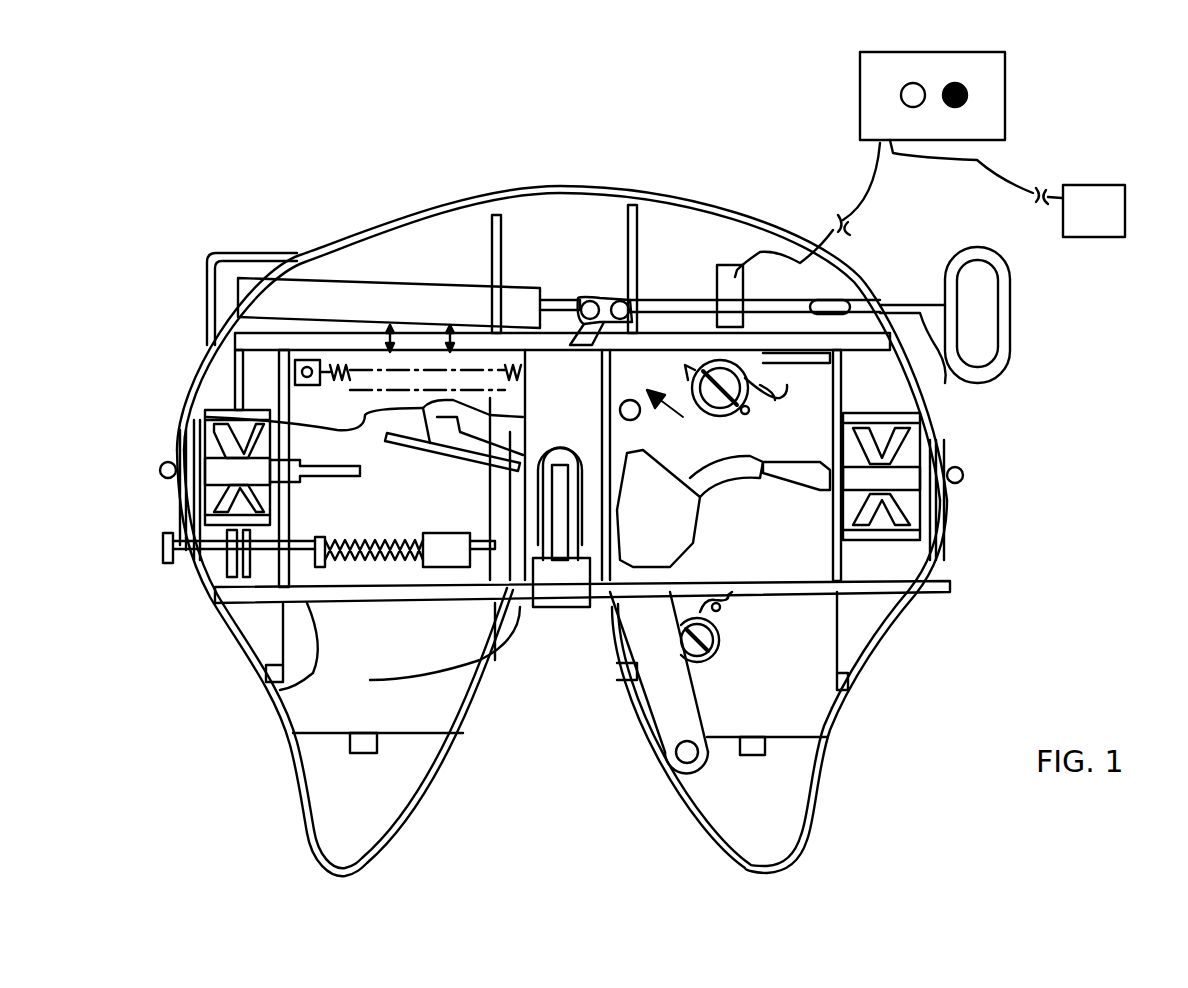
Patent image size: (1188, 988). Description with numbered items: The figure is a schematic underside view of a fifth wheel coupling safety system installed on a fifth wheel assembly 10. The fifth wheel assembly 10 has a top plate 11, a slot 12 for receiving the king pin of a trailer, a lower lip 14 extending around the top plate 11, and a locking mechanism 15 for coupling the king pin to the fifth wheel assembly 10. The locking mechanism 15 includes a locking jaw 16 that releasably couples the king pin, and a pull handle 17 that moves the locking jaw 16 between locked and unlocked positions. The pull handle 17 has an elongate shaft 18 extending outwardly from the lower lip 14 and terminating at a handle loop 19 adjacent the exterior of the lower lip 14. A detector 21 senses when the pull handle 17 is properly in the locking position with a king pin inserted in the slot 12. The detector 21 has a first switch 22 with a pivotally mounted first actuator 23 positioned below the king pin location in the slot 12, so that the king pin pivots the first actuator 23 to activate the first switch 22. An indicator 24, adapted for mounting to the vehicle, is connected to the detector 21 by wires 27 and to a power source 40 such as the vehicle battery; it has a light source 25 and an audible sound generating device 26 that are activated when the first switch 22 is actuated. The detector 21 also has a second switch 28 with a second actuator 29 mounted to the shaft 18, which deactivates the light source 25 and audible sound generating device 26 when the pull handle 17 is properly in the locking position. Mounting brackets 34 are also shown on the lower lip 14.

The fifth wheel assembly 10 is at (340, 198).
The top plate 11 is at (457, 240).
The slot 12 is at (578, 605).
The lower lip 14 is at (925, 605).
The locking mechanism 15 is at (687, 457).
The locking jaw 16 is at (225, 412).
The pull handle 17 is at (870, 400).
The elongate shaft 18 is at (677, 303).
The handle loop 19 is at (1010, 278).
The detector 21 is at (780, 203).
The first switch 22 is at (560, 640).
The first actuator 23 is at (533, 603).
The indicator 24 is at (1033, 60).
The light source 25 is at (918, 83).
The audible sound generating device 26 is at (962, 85).
The wires 27 is at (530, 195).
The second switch 28 is at (730, 277).
The second actuator 29 is at (735, 270).
The mounting bracket 34 is at (370, 745).
The power source 40 is at (1130, 185).